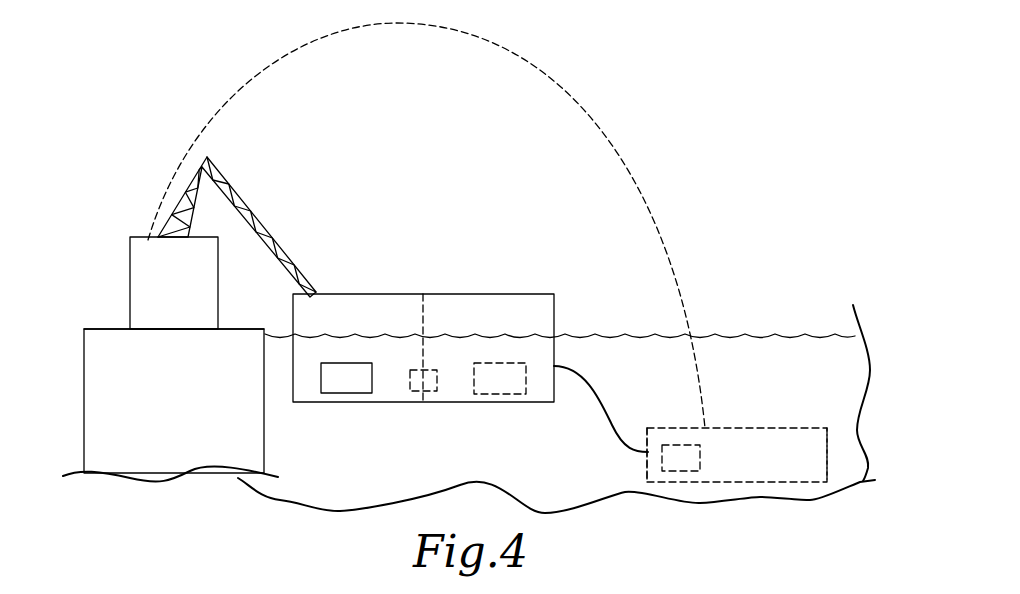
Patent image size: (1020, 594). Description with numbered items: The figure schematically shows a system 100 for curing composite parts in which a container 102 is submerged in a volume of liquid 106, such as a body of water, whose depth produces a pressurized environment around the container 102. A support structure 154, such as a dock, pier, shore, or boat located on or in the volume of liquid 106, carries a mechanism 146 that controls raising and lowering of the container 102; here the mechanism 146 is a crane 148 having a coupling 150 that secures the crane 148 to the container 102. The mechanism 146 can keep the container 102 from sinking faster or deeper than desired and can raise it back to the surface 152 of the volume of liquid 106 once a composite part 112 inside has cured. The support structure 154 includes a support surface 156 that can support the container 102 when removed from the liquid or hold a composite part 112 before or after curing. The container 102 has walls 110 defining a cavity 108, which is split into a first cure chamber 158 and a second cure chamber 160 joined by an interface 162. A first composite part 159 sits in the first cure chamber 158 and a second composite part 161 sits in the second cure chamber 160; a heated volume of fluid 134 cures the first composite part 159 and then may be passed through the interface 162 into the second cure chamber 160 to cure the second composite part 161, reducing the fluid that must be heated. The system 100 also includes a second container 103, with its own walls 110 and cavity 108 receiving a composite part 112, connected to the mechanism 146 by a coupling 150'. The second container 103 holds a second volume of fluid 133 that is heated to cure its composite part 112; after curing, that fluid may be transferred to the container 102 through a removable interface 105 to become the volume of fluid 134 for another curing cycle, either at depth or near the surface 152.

The system for curing composite parts 100 is at (644, 130).
The container 102 is at (349, 290).
The second container 103 is at (829, 445).
The interface 105 is at (593, 386).
The volume of liquid 106 is at (835, 355).
The cavity 108 is at (734, 446).
The walls 110 is at (640, 435).
The composite part 112 is at (337, 387).
The second volume of fluid 133 is at (768, 450).
The volume of fluid 134 is at (461, 312).
The mechanism 146 is at (130, 272).
The crane 148 is at (140, 234).
The coupling 150 is at (309, 233).
The coupling 150' is at (446, 225).
The surface of volume of liquid 152 is at (597, 337).
The support structure 154 is at (84, 408).
The support surface 156 is at (100, 329).
The first cure chamber 158 is at (374, 327).
The first composite part 159 is at (357, 395).
The second cure chamber 160 is at (504, 327).
The second composite part 161 is at (517, 378).
The interface 162 is at (412, 386).